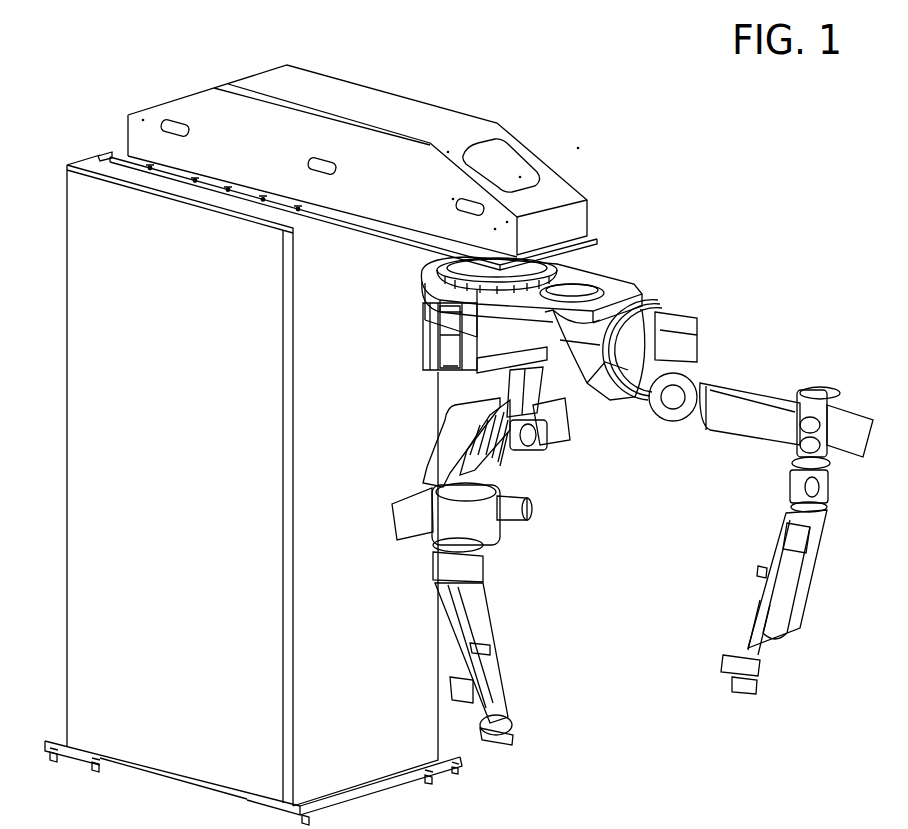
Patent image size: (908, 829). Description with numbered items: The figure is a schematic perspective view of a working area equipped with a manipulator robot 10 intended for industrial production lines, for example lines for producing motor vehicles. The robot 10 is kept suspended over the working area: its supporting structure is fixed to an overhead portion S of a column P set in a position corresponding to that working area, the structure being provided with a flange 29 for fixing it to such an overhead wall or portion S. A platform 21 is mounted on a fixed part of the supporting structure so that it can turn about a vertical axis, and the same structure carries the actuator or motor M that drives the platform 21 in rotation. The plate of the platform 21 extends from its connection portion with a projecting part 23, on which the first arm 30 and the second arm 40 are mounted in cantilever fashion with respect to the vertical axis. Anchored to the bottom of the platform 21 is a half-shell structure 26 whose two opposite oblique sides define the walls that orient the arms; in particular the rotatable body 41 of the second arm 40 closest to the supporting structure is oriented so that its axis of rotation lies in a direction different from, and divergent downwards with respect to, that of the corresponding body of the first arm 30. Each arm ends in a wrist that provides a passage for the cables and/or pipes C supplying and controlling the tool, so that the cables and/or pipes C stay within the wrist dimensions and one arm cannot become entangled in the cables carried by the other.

The manipulator robot 10 is at (772, 286).
The column P is at (87, 390).
The overhead portion S is at (582, 217).
The platform 21 is at (611, 283).
The flange 29 is at (433, 266).
The projecting part 23 is at (445, 331).
The motor M is at (443, 347).
The half-shell structure 26 is at (605, 383).
The rotatable body of the second arm 41 is at (572, 400).
The second arm 40 is at (489, 614).
The cables and/or pipes C is at (487, 620).
The first arm 30 is at (807, 600).